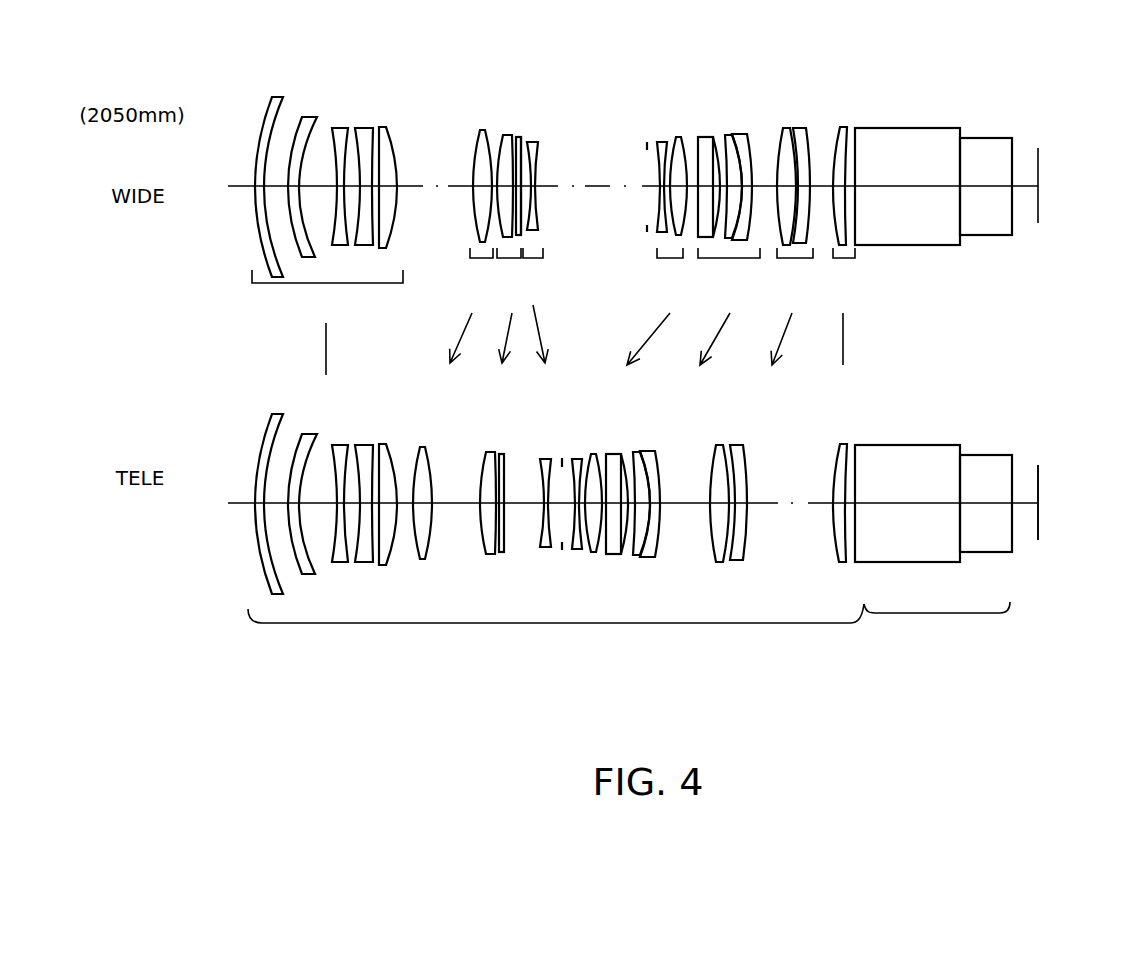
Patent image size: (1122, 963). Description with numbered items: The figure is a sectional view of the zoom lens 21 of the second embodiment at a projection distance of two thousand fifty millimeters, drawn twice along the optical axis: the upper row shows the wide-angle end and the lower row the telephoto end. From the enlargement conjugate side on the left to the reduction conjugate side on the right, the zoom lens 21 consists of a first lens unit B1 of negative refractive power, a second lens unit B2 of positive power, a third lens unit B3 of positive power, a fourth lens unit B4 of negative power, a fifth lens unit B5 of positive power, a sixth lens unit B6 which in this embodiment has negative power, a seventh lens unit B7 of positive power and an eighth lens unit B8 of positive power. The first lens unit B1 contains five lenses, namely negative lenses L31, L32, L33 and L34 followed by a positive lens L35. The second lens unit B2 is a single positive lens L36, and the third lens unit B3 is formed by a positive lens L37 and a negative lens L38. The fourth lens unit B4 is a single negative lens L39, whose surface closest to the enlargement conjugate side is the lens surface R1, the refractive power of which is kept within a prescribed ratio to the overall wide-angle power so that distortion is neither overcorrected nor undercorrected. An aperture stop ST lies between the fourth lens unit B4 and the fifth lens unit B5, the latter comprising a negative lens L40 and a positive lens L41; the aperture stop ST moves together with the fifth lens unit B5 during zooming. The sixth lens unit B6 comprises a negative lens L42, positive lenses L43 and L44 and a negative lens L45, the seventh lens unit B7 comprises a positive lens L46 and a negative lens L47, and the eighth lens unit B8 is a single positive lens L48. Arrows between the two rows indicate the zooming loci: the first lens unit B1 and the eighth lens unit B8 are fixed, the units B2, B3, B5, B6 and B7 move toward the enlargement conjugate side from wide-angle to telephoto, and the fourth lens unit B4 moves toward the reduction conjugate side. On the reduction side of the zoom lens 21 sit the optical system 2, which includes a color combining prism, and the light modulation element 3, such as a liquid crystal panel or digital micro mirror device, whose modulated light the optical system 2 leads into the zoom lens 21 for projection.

The negative lens L31 is at (281, 97).
The negative lens L32 is at (315, 117).
The negative lens L33 is at (341, 128).
The negative lens L34 is at (375, 128).
The positive lens L35 is at (387, 127).
The positive lens L36 is at (481, 130).
The positive lens L37 is at (503, 135).
The negative lens L38 is at (520, 137).
The lens surface R1 is at (517, 140).
The negative lens L39 is at (537, 142).
The negative lens L40 is at (662, 142).
The positive lens L41 is at (678, 137).
The negative lens L42 is at (705, 137).
The positive lens L43 is at (717, 137).
The positive lens L44 is at (728, 135).
The negative lens L45 is at (746, 134).
The positive lens L46 is at (783, 128).
The negative lens L47 is at (807, 128).
The positive lens L48 is at (842, 127).
The aperture stop ST is at (645, 228).
The first lens unit B1 is at (327, 322).
The second lens unit B2 is at (471, 305).
The third lens unit B3 is at (510, 305).
The fourth lens unit B4 is at (541, 305).
The fifth lens unit B5 is at (656, 306).
The sixth lens unit B6 is at (729, 306).
The seventh lens unit B7 is at (792, 306).
The eighth lens unit B8 is at (848, 306).
The zoom lens 21 is at (535, 623).
The optical system 2 is at (927, 613).
The light modulation element 3 is at (1040, 475).